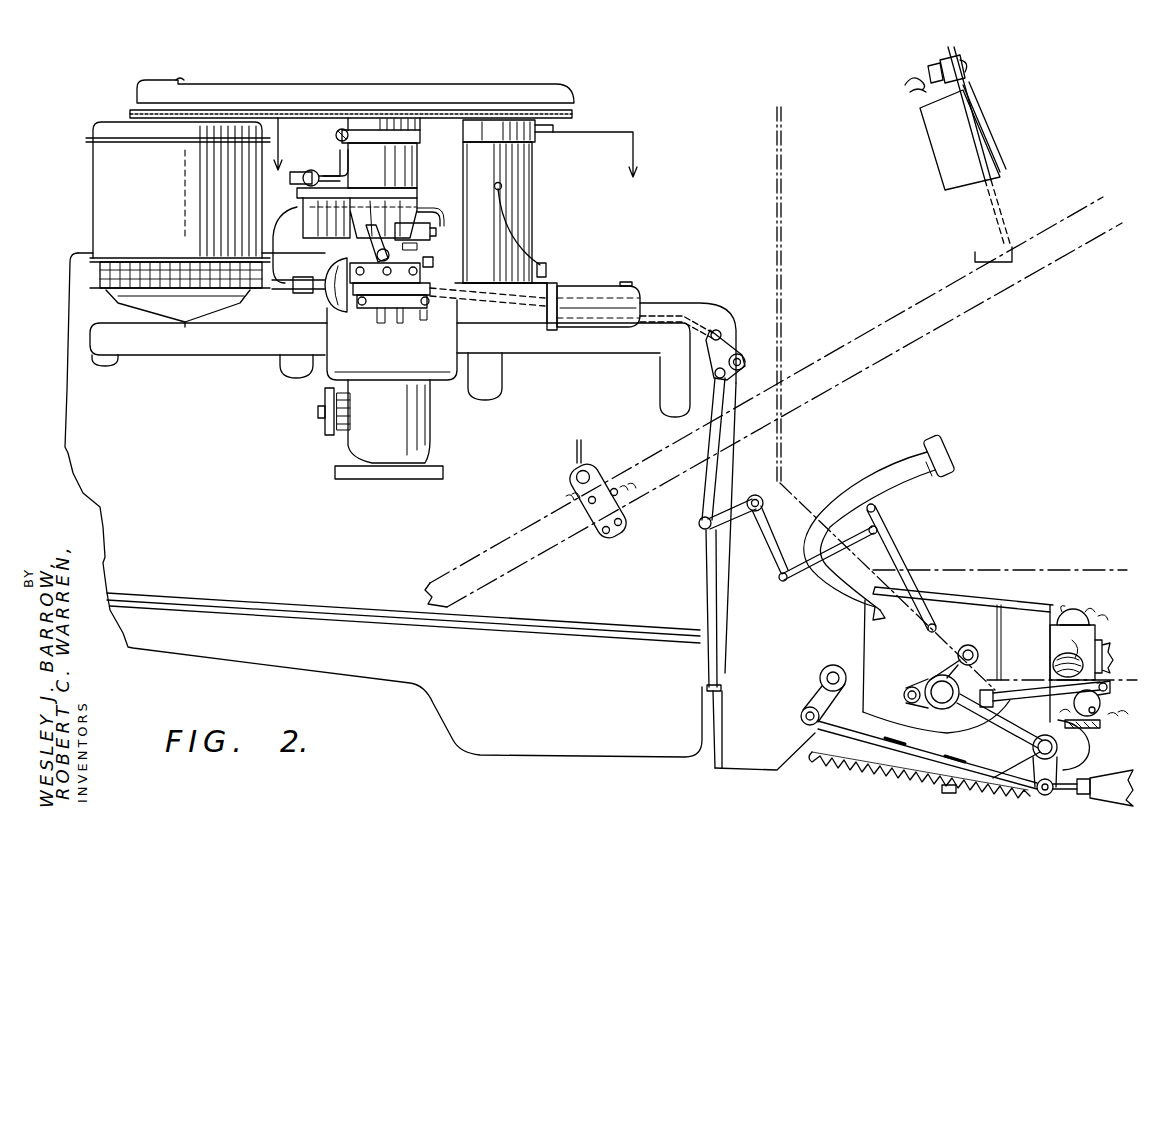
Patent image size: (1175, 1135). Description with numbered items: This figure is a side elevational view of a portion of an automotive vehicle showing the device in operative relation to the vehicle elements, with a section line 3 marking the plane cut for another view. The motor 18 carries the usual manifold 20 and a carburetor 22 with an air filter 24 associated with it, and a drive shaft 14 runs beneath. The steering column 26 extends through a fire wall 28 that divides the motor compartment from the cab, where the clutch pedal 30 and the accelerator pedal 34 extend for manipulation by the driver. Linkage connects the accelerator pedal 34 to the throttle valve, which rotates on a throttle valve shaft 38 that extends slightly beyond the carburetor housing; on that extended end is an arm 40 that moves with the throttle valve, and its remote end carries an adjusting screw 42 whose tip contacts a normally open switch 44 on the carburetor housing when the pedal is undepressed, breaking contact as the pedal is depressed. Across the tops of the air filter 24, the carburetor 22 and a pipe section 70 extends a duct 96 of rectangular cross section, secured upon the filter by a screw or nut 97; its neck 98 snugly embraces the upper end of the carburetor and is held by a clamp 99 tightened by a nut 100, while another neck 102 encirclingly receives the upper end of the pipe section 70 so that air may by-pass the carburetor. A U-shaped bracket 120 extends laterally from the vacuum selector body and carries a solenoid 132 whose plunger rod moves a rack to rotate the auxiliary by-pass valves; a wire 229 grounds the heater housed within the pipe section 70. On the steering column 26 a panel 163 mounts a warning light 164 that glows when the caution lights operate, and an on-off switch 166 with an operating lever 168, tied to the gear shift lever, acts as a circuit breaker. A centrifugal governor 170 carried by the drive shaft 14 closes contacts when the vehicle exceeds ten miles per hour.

The drive shaft 14 is at (1112, 663).
The motor 18 is at (65, 385).
The manifold 20 is at (175, 357).
The carburetor 22 is at (442, 150).
The air filter 24 is at (93, 156).
The steering column 26 is at (886, 320).
The fire wall 28 is at (782, 276).
The clutch pedal 30 is at (917, 477).
The accelerator pedal 34 is at (903, 554).
The throttle valve shaft 38 is at (402, 253).
The arm 40 is at (370, 248).
The adjusting screw 42 is at (368, 233).
The normally open switch 44 is at (435, 226).
The pipe section 70 is at (532, 178).
The duct 96 is at (332, 80).
The screw or nut 97 is at (180, 80).
The neck or flange 98 is at (340, 133).
The clamp 99 is at (420, 135).
The nut 100 is at (340, 147).
The neck or flange 102 is at (552, 131).
The U-shaped bracket 120 is at (543, 292).
The solenoid 132 is at (597, 286).
The panel 163 is at (1000, 206).
The warning light 164 is at (962, 74).
The on-off switch 166 is at (590, 470).
The operating lever 168 is at (578, 452).
The governor 170 is at (1070, 612).
The wire 229 is at (545, 260).
The section line 3- 3 is at (452, 157).